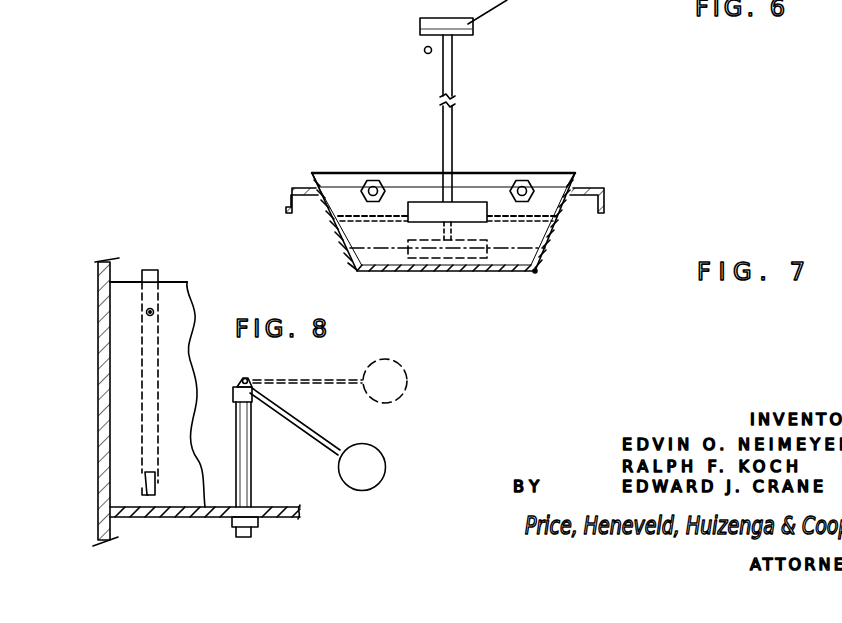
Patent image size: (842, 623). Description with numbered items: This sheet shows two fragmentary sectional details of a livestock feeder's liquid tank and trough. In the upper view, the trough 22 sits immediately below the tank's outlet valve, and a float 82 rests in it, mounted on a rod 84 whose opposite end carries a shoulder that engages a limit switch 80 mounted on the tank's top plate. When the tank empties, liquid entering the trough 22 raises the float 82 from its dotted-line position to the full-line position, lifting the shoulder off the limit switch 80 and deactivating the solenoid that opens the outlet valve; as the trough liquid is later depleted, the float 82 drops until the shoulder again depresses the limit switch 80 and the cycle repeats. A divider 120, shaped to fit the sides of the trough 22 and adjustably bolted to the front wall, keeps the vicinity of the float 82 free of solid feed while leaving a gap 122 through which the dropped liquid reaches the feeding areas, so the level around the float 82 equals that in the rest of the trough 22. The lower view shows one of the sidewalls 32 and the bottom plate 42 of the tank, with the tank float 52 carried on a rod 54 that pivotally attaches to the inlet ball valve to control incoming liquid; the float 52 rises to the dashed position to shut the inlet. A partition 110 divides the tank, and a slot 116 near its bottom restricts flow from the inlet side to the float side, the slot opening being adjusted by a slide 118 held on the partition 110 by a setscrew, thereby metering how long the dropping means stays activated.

In FIG. 7, the trough 22 is at (553, 238).
In FIG. 7, the limit switch 80 is at (424, 50).
In FIG. 7, the float 82 is at (464, 209).
In FIG. 7, the rod 84 is at (454, 112).
In FIG. 7, the divider 120 is at (343, 182).
In FIG. 7, the gap 122 is at (535, 271).
In FIG. 8, the sidewalls 32 is at (98, 289).
In FIG. 8, the bottom plate 42 is at (283, 500).
In FIG. 8, the float 52 is at (368, 462).
In FIG. 8, the rod 54 is at (310, 432).
In FIG. 8, the partition 110 is at (110, 367).
In FIG. 8, the slot 116 is at (140, 488).
In FIG. 8, the slide 118 is at (155, 270).